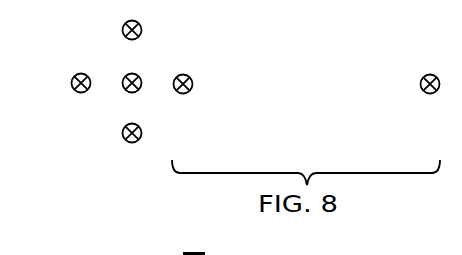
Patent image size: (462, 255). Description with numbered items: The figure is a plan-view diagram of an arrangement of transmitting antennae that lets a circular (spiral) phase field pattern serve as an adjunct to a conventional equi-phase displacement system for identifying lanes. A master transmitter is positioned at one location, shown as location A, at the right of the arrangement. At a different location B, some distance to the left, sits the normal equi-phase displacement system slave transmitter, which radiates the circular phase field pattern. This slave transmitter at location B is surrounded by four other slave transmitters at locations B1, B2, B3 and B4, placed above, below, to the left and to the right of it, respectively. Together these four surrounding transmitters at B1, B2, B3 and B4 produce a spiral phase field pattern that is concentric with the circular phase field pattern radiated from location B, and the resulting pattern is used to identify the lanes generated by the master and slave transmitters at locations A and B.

The slave transmitter location B1 is at (130, 37).
The slave transmitter location B2 is at (131, 141).
The slave transmitter location B3 is at (79, 92).
The slave transmitter location B4 is at (185, 93).
The slave transmitter location B is at (132, 92).
The master transmitter location A is at (430, 93).